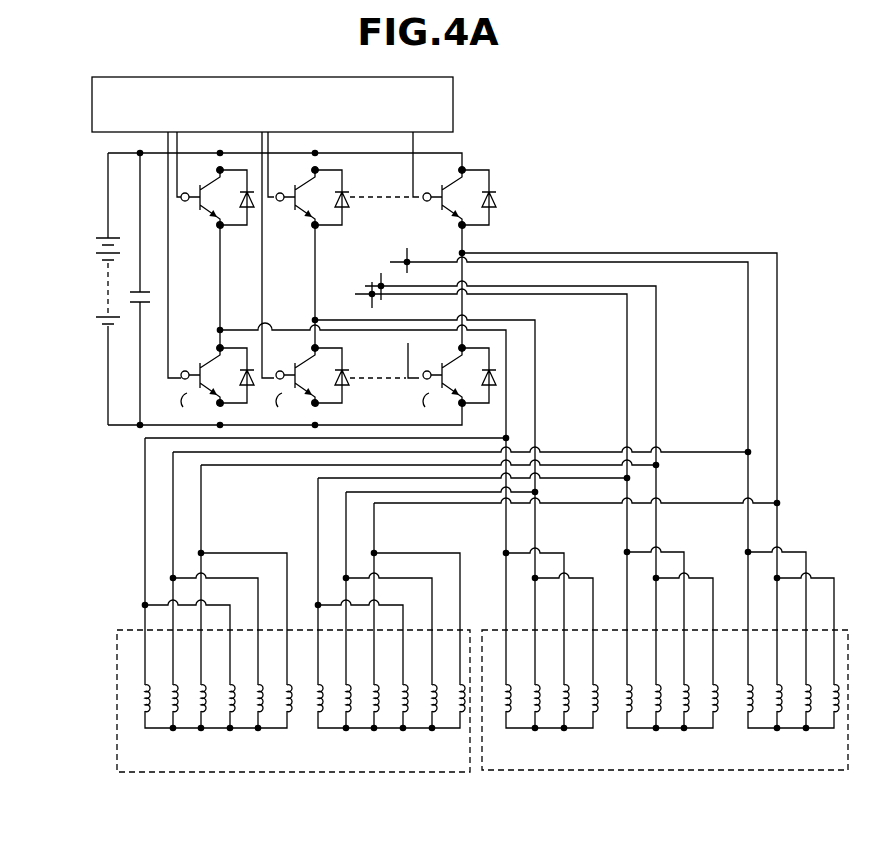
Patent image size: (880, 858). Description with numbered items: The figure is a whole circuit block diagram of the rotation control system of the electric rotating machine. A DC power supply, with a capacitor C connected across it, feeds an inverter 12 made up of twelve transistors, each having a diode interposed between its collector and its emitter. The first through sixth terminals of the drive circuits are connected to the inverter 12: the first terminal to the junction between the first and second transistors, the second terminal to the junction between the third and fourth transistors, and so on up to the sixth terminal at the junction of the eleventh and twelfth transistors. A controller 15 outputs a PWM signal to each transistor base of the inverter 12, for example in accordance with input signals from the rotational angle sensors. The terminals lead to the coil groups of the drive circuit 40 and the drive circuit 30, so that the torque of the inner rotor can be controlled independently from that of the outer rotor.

The controller 15 is at (453, 103).
The inverter 12 is at (508, 162).
The two pole pair inner rotor drive circuit 40 is at (310, 772).
The two pole inner rotor six-phase drive circuit 30 is at (672, 770).